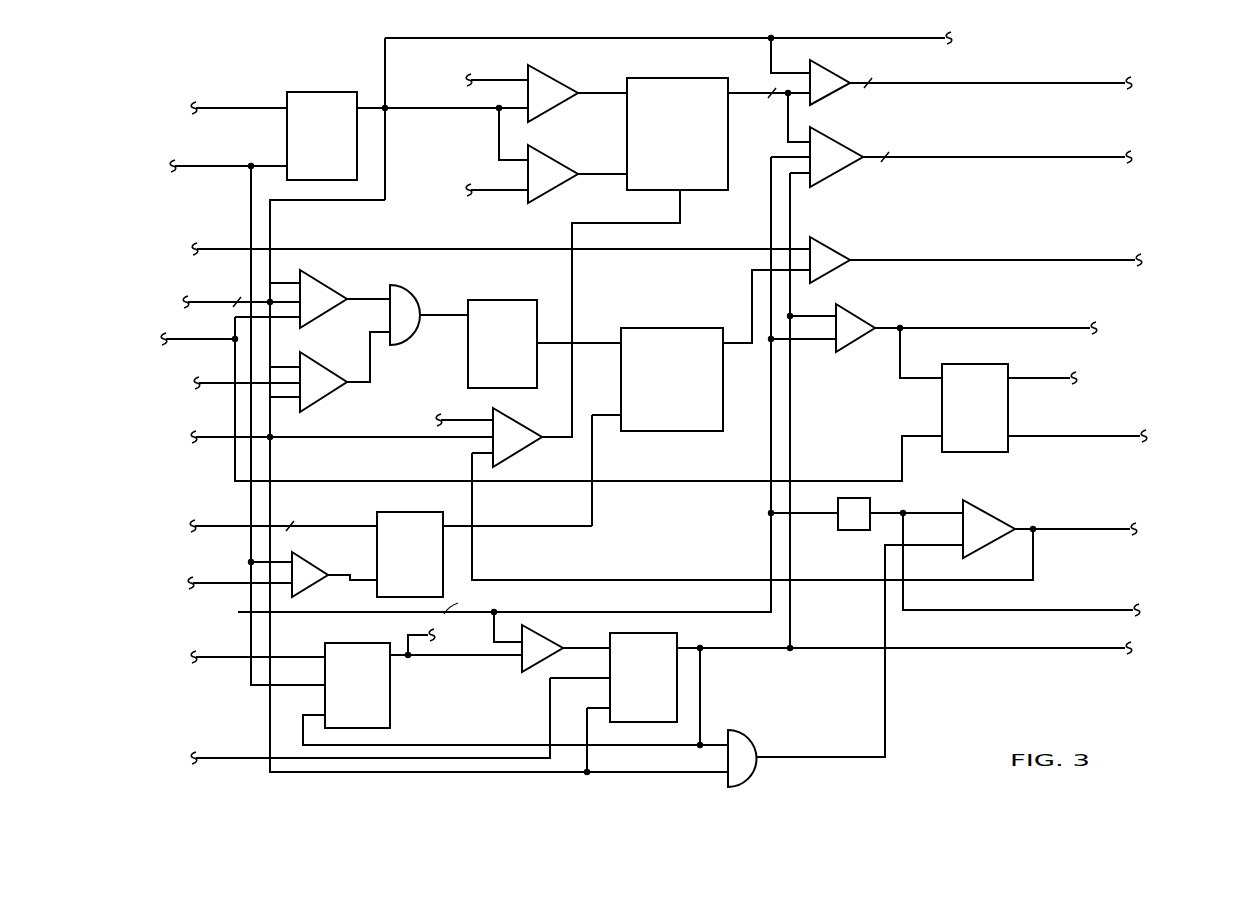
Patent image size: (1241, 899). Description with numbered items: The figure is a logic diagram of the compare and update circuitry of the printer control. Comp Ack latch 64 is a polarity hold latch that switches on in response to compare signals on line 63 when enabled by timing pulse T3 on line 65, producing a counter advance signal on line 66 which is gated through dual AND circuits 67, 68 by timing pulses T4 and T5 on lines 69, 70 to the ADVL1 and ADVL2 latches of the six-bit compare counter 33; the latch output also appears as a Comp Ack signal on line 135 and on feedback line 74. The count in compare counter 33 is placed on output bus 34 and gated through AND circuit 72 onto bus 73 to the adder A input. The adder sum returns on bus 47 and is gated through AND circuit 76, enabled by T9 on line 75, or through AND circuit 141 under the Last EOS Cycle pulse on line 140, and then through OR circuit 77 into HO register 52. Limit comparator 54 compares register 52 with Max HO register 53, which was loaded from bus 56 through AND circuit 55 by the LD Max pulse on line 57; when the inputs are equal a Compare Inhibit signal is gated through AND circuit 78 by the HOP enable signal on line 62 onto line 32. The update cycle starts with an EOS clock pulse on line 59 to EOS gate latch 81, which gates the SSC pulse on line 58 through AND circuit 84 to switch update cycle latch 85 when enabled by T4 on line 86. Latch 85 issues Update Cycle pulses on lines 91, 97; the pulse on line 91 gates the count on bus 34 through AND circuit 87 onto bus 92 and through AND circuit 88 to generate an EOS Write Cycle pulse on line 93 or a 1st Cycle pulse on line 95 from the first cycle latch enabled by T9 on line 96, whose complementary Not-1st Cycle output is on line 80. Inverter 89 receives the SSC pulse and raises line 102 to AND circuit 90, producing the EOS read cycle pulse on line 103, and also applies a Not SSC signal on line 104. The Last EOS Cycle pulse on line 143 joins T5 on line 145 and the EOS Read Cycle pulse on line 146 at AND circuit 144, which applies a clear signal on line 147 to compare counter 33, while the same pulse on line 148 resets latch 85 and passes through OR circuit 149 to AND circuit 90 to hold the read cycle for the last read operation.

The compare signal line 63 is at (205, 103).
The Comp Ack latch 64 is at (331, 118).
The T3 timing pulse line 65 is at (235, 421).
The counter advance signal line 66 is at (442, 119).
The Comp Ack signal line 135 is at (710, 32).
The feedback line 74 is at (327, 486).
The HOP enable signal line 62 is at (432, 248).
The T4 timing pulse line 69 is at (487, 73).
The AND circuit 67 is at (577, 89).
The AND circuit 68 is at (577, 169).
The T5 timing pulse line 70 is at (483, 197).
The compare counter 33 is at (693, 124).
The output bus 34 is at (769, 106).
The AND circuit 72 is at (821, 71).
The bus 73 is at (1040, 84).
The AND circuit 87 is at (821, 154).
The bus 92 is at (1044, 160).
The Update Cycle pulse line 91 is at (788, 419).
The AND circuit 78 is at (799, 286).
The Compare Inhibit line 32 is at (996, 262).
The clear signal line 147 is at (623, 313).
The AND circuit 76 is at (312, 293).
The AND circuit 141 is at (278, 372).
The OR circuit 77 is at (415, 305).
The bus 47 is at (193, 295).
The T9 timing pulse line 75 is at (188, 339).
The T9 pulse line 96 is at (588, 410).
The Last EOS Cycle pulse line 140 is at (165, 447).
The Last EOS Cycle line 143 is at (381, 448).
The T5 timing pulse line 145 is at (455, 413).
The AND circuit 144 is at (525, 434).
The HO register 52 is at (544, 328).
The limit comparator 54 is at (657, 416).
The AND circuit 88 is at (825, 323).
The EOS Write Cycle pulse line 93 is at (1027, 330).
The 1st Cycle pulse line 95 is at (1025, 390).
The Not-1st Cycle pulse line 80 is at (1121, 438).
The bus 56 is at (231, 518).
The Max HO register 53 is at (467, 543).
The AND circuit 55 is at (334, 567).
The LD Max pulse line 57 is at (189, 577).
The SSC pulse line 58 is at (422, 399).
The EOS clock pulse line 59 is at (215, 666).
The EOS gate latch 81 is at (515, 685).
The AND circuit 84 is at (566, 643).
The update cycle latch 85 is at (644, 693).
The T4 clock pulse line 86 is at (357, 732).
The Last EOS Cycle reset line 148 is at (499, 783).
The OR circuit 149 is at (845, 666).
The Update Cycle pulse line 97 is at (946, 692).
The inverter 89 is at (831, 503).
The inverter output line 102 is at (916, 499).
The Not SSC signal line 104 is at (1021, 574).
The AND circuit 90 is at (989, 520).
The EOS read cycle pulse line 103 is at (1125, 530).
The EOS Read Cycle pulse line 146 is at (752, 517).